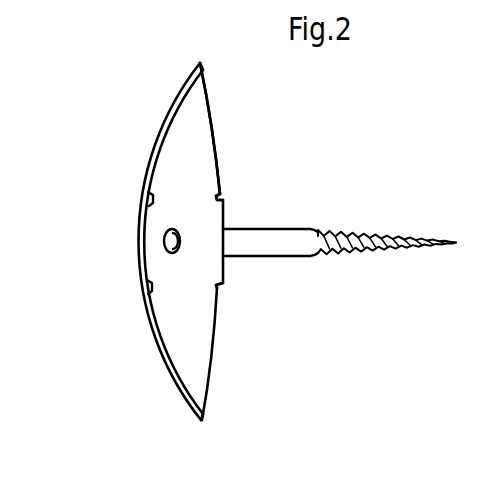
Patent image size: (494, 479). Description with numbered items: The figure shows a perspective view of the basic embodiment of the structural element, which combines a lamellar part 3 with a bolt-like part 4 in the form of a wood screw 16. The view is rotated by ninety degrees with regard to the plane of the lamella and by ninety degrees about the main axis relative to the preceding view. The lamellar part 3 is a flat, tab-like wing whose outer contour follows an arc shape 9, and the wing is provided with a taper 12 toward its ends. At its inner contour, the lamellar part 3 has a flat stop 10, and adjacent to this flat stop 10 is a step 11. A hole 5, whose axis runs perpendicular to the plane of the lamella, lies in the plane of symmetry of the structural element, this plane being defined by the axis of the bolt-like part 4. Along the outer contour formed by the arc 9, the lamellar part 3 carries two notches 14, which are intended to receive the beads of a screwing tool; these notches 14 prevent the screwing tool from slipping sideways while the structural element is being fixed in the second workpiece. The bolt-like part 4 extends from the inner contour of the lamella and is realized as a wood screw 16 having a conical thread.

The lamellar part 3 is at (212, 345).
The bolt-like part 4 is at (339, 243).
The hole 5 is at (165, 238).
The arc shape 9 is at (150, 140).
The flat stop 10 is at (226, 213).
The step 11 is at (303, 372).
The taper 12 is at (215, 113).
The notches 14 is at (144, 287).
The wood screw 16 is at (370, 232).